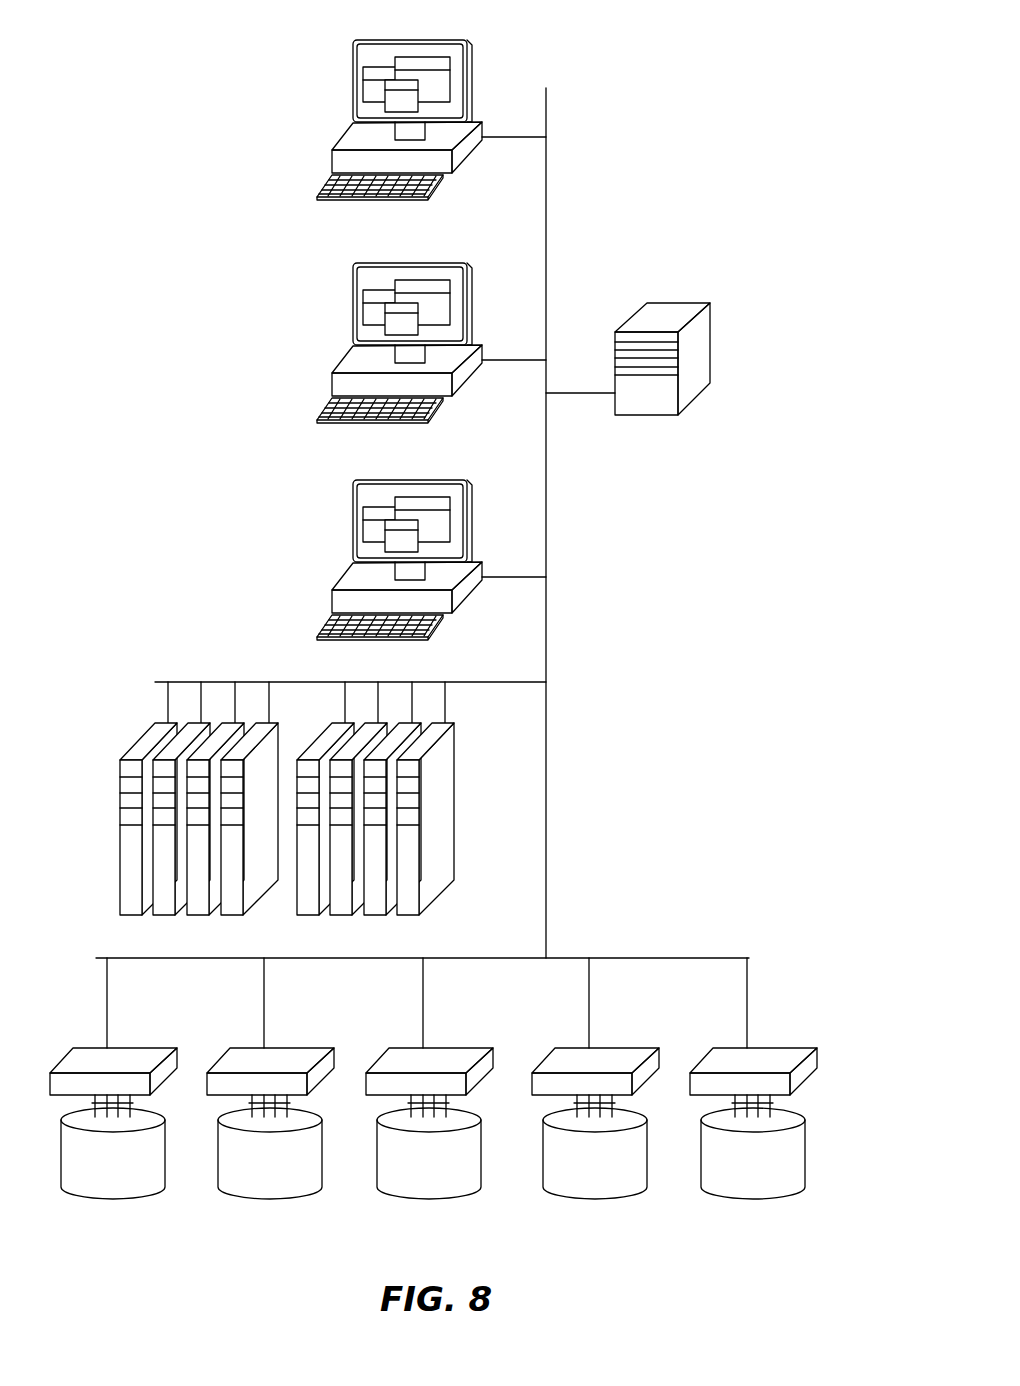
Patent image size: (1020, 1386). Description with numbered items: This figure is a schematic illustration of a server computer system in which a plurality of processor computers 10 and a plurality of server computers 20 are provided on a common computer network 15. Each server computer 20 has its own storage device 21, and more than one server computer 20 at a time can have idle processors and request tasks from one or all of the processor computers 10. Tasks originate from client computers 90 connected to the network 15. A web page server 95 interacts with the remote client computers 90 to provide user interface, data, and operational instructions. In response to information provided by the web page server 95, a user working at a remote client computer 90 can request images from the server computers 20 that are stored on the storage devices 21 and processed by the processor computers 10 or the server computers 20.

The client computer 90 is at (353, 60).
The web page server 95 is at (667, 315).
The processor computer 10 is at (148, 740).
The computer network 15 is at (707, 958).
The server computer 20 is at (88, 1060).
The storage device 21 is at (117, 1167).